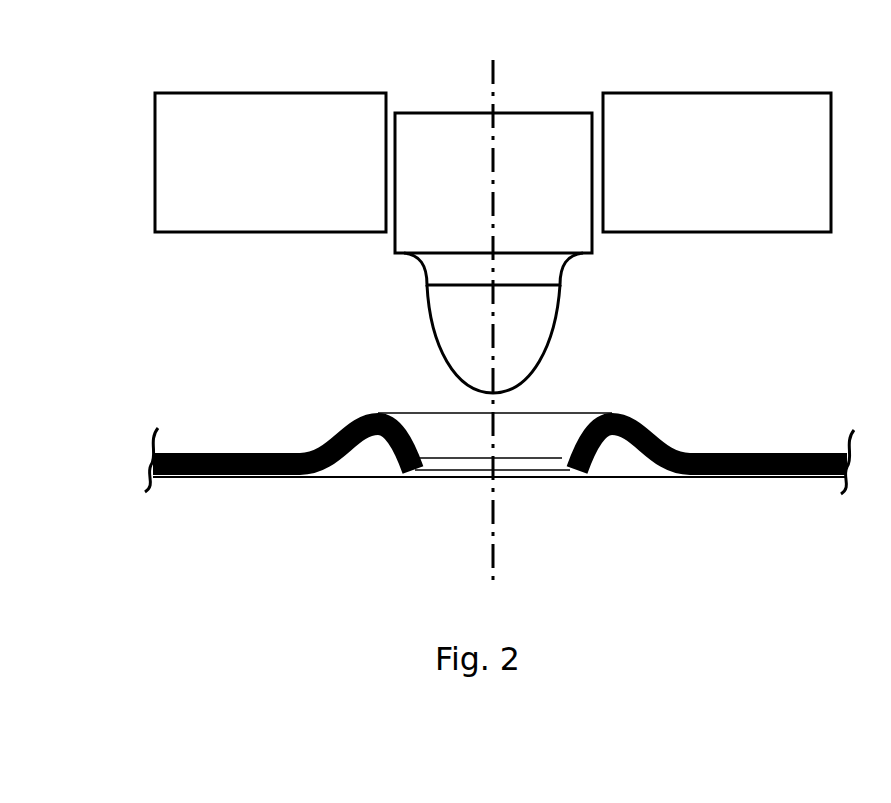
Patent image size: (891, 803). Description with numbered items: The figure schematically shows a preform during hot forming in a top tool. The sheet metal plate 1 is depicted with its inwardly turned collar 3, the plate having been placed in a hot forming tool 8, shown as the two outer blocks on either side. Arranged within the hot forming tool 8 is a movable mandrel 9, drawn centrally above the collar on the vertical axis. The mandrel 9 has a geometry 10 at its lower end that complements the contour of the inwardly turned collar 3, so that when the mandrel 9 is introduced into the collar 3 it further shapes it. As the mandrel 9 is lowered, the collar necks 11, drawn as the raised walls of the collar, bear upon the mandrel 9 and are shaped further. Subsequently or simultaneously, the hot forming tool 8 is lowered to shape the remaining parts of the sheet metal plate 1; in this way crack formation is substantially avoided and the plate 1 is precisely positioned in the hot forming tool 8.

The sheet metal plate 1 is at (230, 433).
The inwardly turned collar 3 is at (625, 418).
The hot forming tool 8 is at (212, 168).
The movable mandrel 9 is at (570, 125).
The geometry 10 is at (573, 263).
The collar necks 11 is at (437, 425).